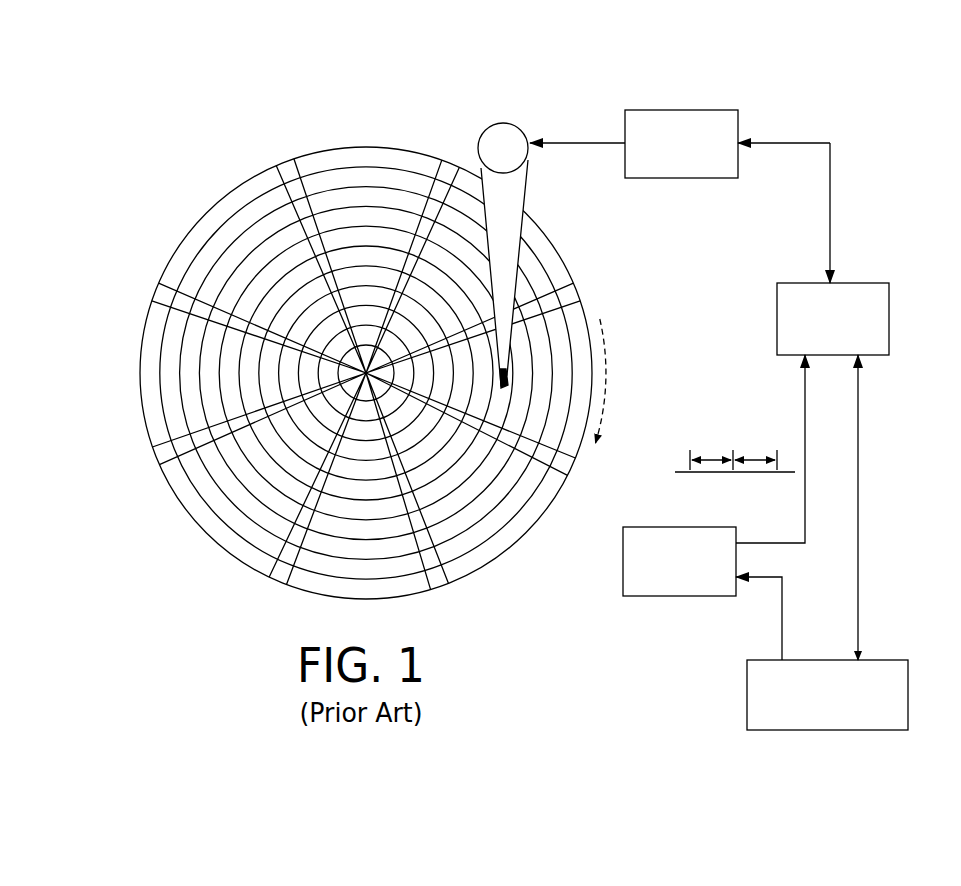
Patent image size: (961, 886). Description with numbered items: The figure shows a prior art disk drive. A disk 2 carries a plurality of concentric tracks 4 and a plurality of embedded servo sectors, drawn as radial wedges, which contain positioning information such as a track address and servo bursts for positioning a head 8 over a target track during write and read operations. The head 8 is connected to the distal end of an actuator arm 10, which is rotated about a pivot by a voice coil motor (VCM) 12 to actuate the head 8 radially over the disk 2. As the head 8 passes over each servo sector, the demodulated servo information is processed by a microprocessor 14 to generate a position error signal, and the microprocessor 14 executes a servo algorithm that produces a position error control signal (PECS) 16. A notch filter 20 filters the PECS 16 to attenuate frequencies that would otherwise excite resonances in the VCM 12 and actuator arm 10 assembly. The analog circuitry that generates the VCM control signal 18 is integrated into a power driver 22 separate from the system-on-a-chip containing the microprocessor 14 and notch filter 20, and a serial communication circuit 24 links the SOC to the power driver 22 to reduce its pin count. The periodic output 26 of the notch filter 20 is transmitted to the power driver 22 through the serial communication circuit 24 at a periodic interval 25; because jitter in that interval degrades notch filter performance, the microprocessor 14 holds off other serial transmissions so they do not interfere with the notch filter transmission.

The disk 2 is at (366, 349).
The concentric tracks 4 is at (368, 177).
The head 8 is at (509, 392).
The actuator arm 10 is at (529, 182).
The voice coil motor 12 is at (503, 123).
The microprocessor 14 is at (747, 692).
The position error control signal 16 is at (782, 618).
The VCM control signal 18 is at (575, 141).
The notch filter 20 is at (623, 567).
The power driver chip 22 is at (677, 178).
The serial communication circuit 24 is at (890, 313).
The periodic interval 25 is at (757, 458).
The periodic output of the notch filter 26 is at (805, 458).